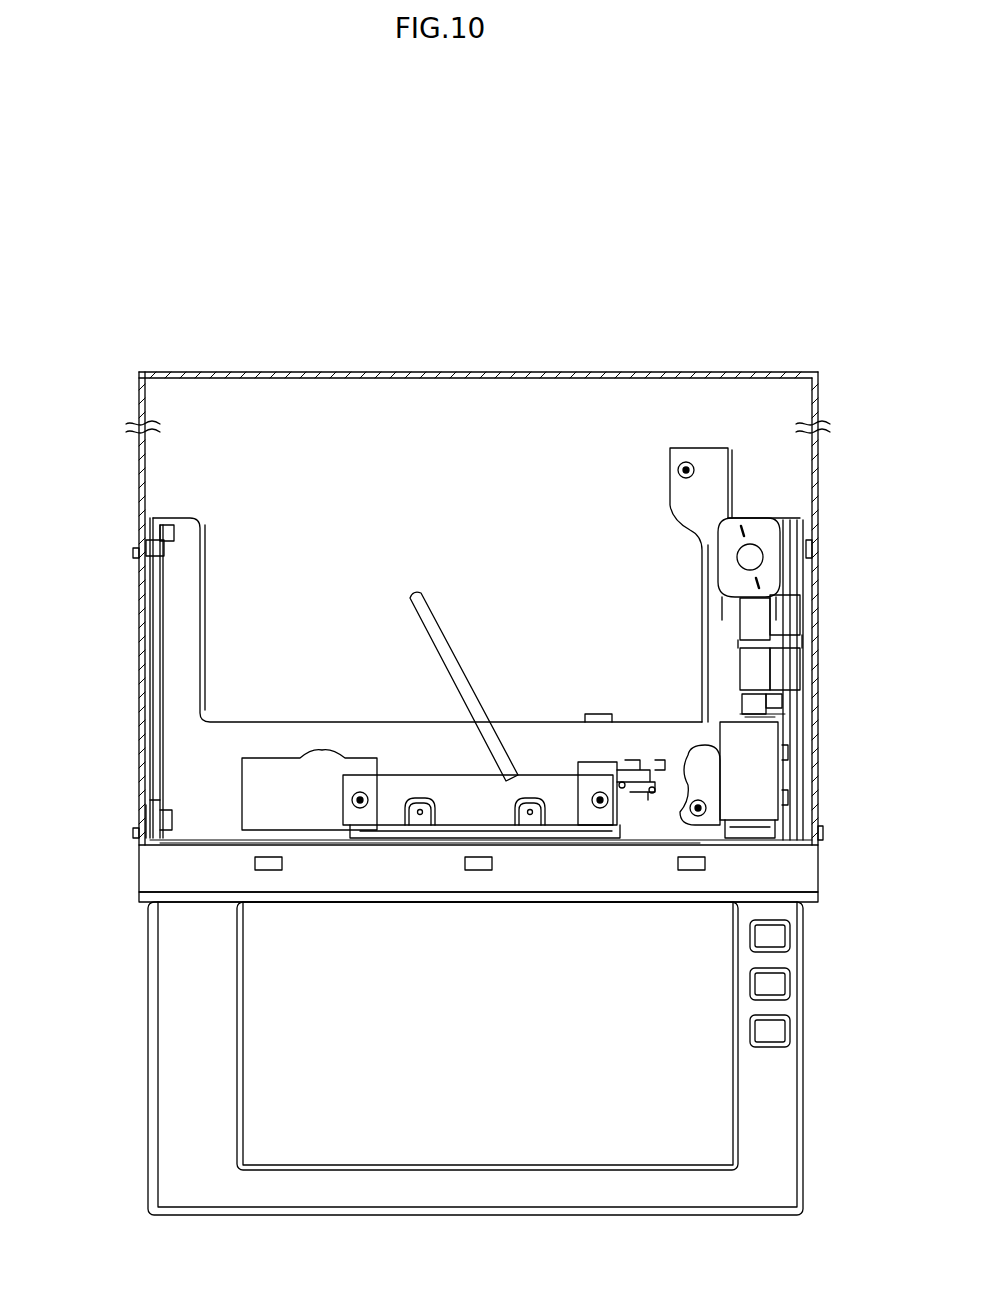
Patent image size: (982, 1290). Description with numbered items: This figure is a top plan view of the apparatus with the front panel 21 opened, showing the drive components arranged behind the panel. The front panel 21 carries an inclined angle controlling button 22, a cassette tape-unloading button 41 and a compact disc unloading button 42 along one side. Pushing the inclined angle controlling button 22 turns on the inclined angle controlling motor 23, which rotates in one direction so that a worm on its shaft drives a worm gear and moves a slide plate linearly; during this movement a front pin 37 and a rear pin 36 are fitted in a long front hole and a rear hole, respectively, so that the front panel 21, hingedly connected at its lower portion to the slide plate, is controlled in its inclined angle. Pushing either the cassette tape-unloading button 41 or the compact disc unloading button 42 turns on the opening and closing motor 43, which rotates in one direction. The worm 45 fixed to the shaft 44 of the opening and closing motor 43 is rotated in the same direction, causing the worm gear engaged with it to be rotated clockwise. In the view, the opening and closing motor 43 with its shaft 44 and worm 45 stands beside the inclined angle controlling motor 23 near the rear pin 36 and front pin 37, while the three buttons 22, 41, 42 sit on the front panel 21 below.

The front panel 21 is at (122, 1050).
The inclined angle controlling button 22 is at (790, 935).
The inclined angle controlling motor 23 is at (770, 578).
The rear pin 36 is at (818, 548).
The front pin 37 is at (818, 832).
The cassette tape-unloading button 41 is at (790, 982).
The compact disc unloading button 42 is at (790, 1030).
The opening and closing motor 43 is at (765, 765).
The shaft 44 is at (760, 710).
The worm 45 is at (748, 680).